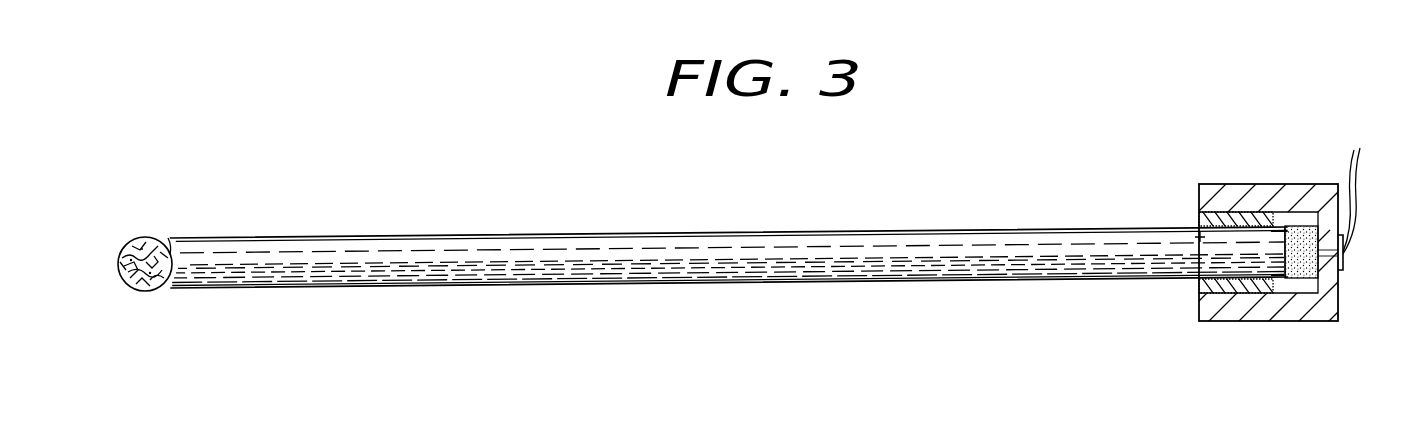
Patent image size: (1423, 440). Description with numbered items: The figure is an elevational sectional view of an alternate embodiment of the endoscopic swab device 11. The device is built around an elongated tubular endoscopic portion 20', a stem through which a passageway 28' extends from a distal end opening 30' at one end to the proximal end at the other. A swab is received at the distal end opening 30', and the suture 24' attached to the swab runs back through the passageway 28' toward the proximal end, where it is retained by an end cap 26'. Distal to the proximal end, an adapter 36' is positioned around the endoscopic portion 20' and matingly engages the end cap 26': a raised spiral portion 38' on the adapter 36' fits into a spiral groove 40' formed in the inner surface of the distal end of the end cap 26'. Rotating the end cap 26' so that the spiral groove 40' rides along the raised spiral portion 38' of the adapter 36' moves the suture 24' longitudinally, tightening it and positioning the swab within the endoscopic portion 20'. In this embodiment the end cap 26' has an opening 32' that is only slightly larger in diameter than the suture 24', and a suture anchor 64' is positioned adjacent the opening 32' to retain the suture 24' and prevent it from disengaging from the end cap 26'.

The swab device 11 is at (698, 189).
The endoscopic portion 20' is at (729, 257).
The suture 24' is at (728, 257).
The end cap 26' is at (1280, 253).
The passageway 28' is at (190, 225).
The distal end opening 30' is at (156, 289).
The opening 32' is at (1293, 273).
The adapter 36' is at (1224, 234).
The raised spiral portion 38' is at (1214, 219).
The spiral groove 40' is at (1238, 219).
The suture anchor 64' is at (1363, 212).